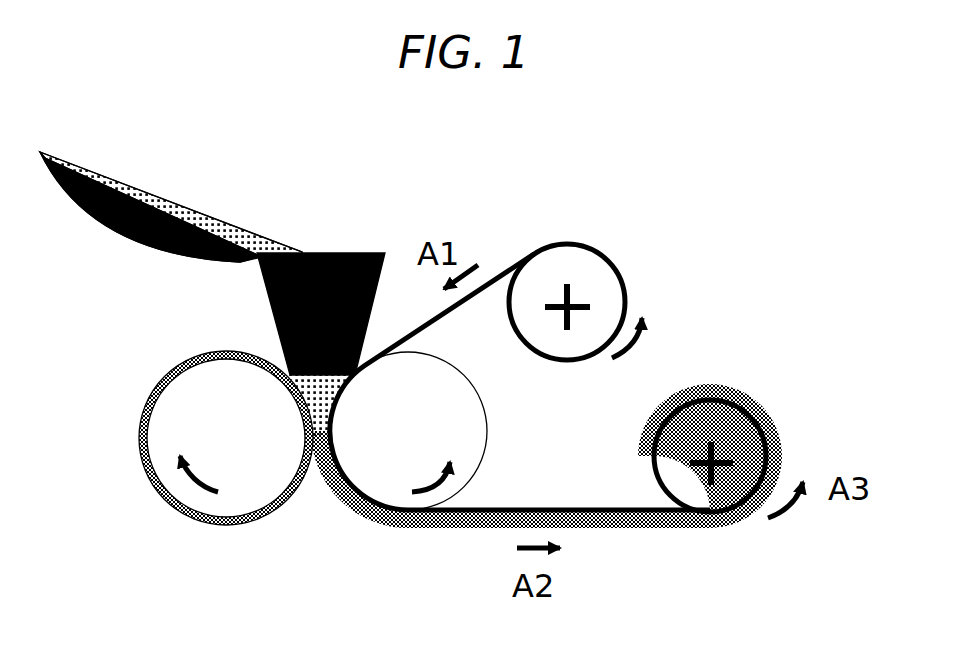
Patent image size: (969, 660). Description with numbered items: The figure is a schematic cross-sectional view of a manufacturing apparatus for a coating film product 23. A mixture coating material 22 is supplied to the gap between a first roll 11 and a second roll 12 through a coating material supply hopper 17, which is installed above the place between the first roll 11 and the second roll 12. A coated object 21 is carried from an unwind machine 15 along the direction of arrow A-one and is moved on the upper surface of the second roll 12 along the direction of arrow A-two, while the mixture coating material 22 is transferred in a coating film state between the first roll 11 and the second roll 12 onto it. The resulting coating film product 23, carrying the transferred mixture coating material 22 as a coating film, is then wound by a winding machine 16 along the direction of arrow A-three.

The first roll 11 is at (185, 403).
The second roll 12 is at (450, 430).
The unwind machine 15 is at (587, 273).
The winding machine 16 is at (727, 422).
The coating material supply hopper 17 is at (265, 293).
The coated object 21 is at (498, 277).
The mixture coating material 22 is at (250, 223).
The coating film product 23 is at (700, 530).